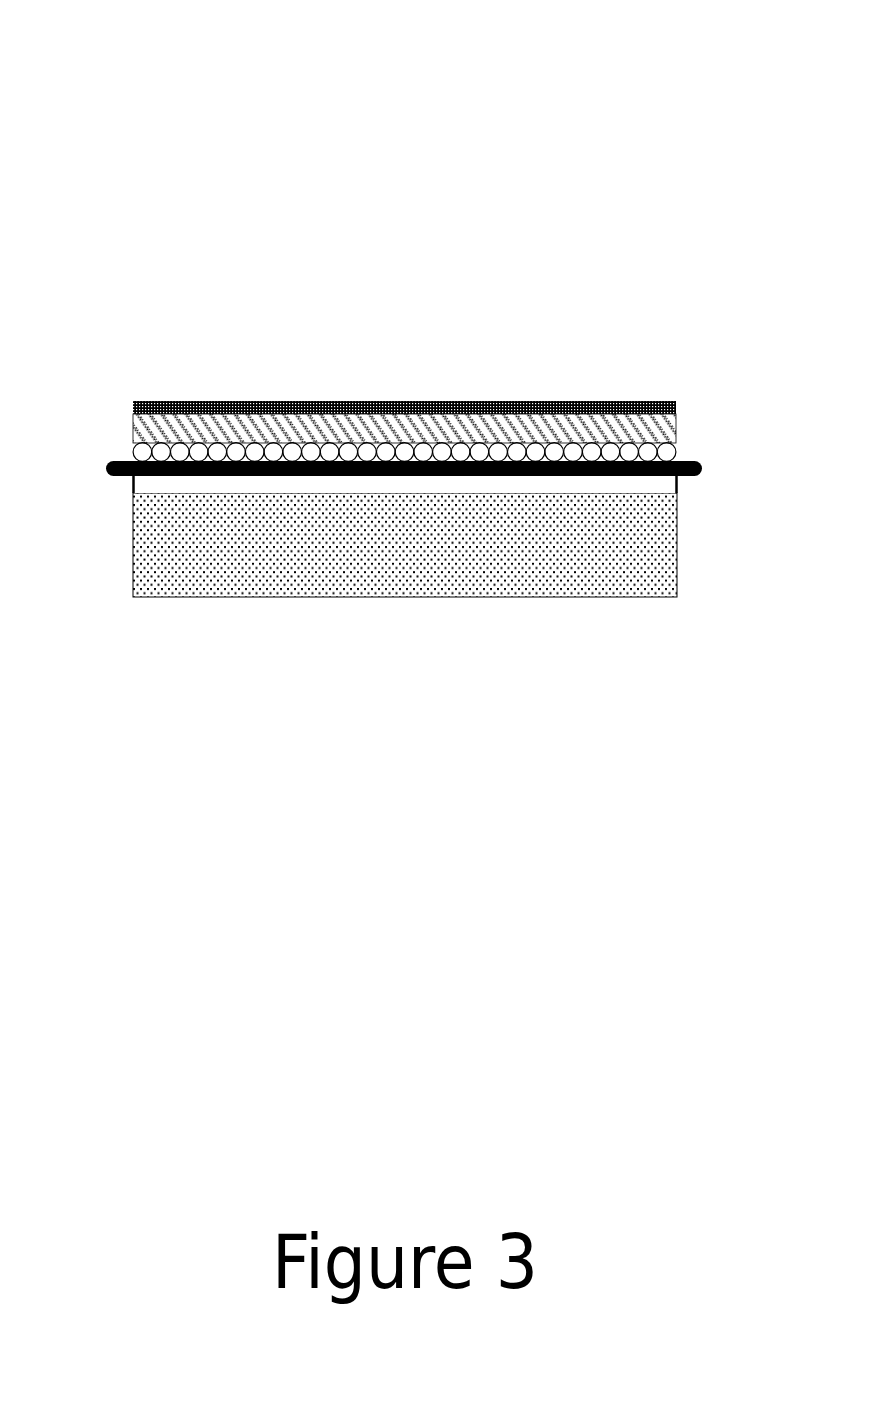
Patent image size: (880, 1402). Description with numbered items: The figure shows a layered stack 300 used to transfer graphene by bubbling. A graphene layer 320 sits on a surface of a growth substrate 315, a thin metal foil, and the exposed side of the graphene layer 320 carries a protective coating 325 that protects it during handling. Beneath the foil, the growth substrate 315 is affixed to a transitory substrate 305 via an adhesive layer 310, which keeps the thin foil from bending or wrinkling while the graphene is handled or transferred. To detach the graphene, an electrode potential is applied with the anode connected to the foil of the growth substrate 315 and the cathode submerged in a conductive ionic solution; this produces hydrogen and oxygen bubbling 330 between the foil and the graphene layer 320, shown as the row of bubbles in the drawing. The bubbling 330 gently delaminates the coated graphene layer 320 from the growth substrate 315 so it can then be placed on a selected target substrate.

The electrode assembly 300 is at (684, 48).
The transitory substrate 305 is at (677, 550).
The adhesive layer 310 is at (678, 484).
The growth substrate 315 is at (108, 470).
The graphene layer 320 is at (677, 425).
The protective coating 325 is at (133, 414).
The bubbling 330 is at (133, 451).